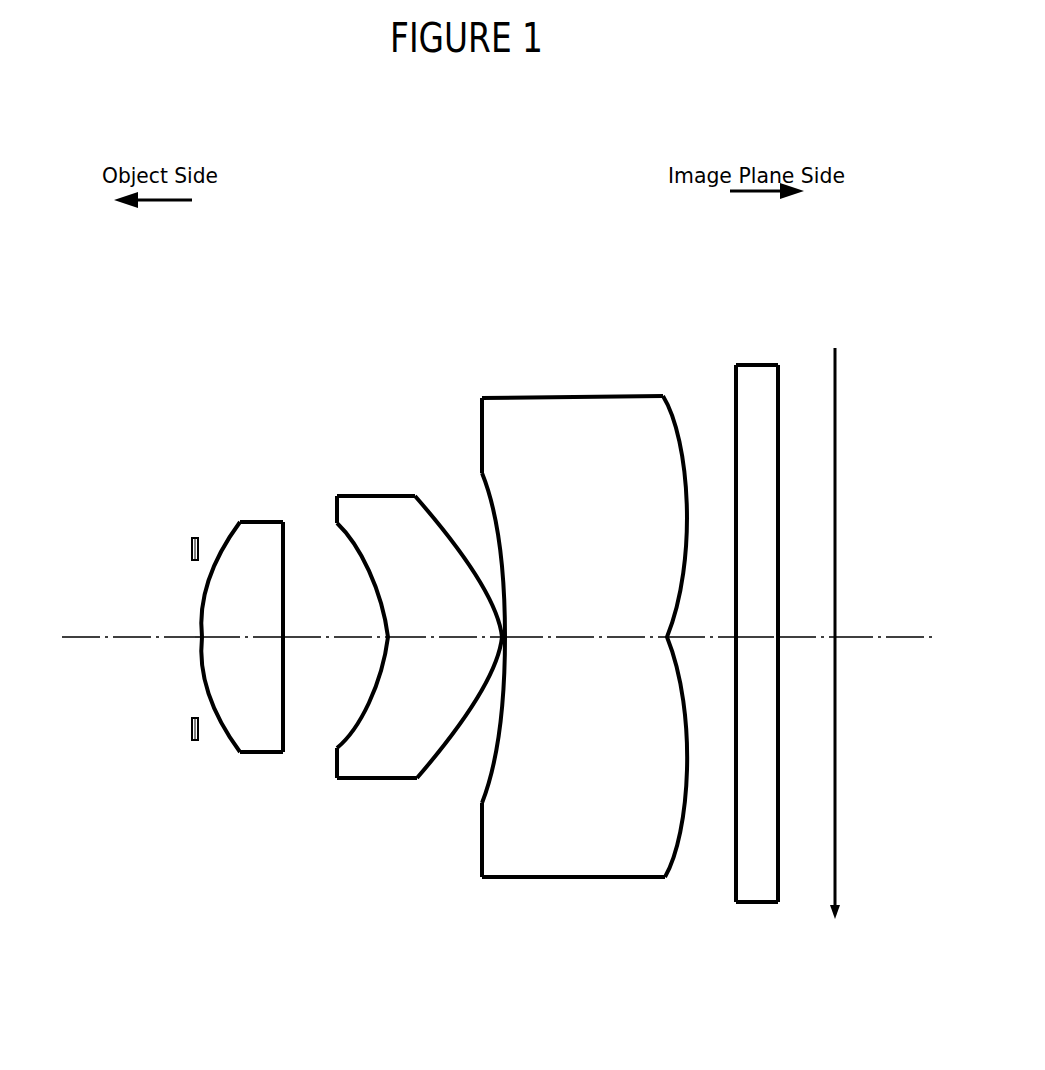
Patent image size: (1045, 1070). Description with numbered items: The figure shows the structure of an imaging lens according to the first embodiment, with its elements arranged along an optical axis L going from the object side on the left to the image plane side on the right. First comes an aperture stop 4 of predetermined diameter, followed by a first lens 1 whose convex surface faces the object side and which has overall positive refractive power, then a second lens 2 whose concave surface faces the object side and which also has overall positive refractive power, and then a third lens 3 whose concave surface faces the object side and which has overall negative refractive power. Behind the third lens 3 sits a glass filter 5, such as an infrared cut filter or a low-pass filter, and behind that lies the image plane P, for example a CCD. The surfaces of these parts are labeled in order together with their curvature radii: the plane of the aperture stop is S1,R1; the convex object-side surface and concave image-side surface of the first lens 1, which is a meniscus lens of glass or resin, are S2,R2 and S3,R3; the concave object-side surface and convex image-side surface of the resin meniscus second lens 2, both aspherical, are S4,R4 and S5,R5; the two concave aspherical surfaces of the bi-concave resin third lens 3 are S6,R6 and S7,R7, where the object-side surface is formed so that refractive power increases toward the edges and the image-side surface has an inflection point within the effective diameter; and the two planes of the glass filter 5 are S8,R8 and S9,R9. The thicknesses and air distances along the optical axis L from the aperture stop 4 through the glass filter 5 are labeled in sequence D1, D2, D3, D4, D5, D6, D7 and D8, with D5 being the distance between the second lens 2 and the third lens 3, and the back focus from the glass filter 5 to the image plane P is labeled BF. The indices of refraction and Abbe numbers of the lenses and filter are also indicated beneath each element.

The first lens 1 is at (244, 548).
The second lens 2 is at (393, 564).
The third lens 3 is at (534, 583).
The aperture stop 4 is at (195, 536).
The glass filter 5 is at (729, 556).
The optical axis L is at (113, 637).
The image plane P is at (836, 409).
The first surface and its curvature radius S1,R1 is at (192, 548).
The second surface and its curvature radius S2,R2 is at (221, 546).
The third surface and its curvature radius S3,R3 is at (286, 560).
The fourth surface and its curvature radius S4,R4 is at (338, 553).
The fifth surface and its curvature radius S5,R5 is at (446, 526).
The sixth surface and its curvature radius S6,R6 is at (494, 513).
The seventh surface and its curvature radius S7,R7 is at (679, 423).
The eighth surface and its curvature radius S8,R8 is at (734, 463).
The ninth surface and its curvature radius S9,R9 is at (780, 450).
The axial distance D1 is at (197, 640).
The axial distance D2 is at (252, 640).
The axial distance D3 is at (350, 640).
The axial distance D4 is at (430, 640).
The axial distance D5 is at (500, 640).
The axial distance D6 is at (607, 640).
The axial distance D7 is at (717, 640).
The axial distance D8 is at (765, 640).
The back focus BF is at (793, 640).